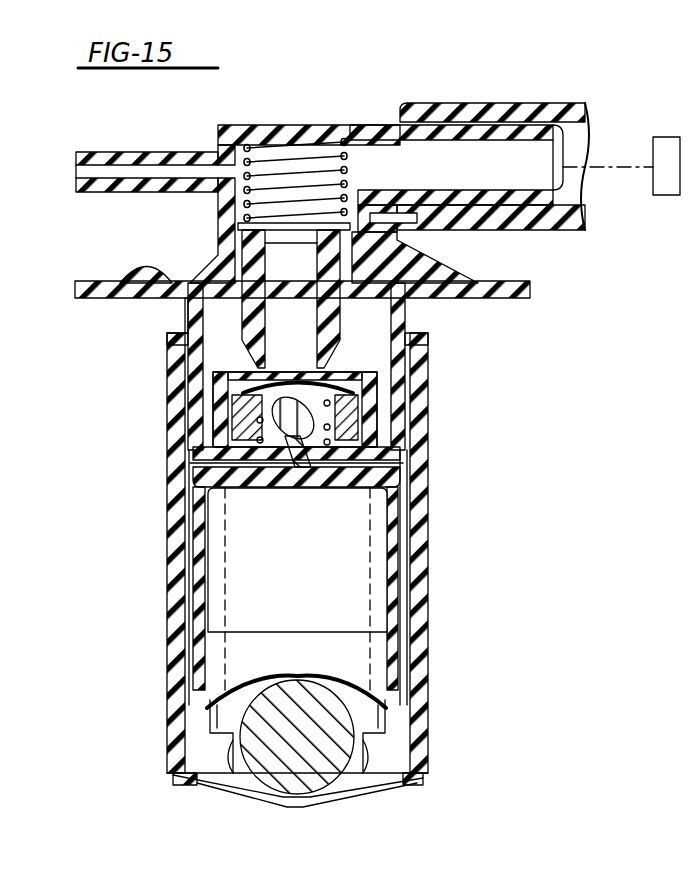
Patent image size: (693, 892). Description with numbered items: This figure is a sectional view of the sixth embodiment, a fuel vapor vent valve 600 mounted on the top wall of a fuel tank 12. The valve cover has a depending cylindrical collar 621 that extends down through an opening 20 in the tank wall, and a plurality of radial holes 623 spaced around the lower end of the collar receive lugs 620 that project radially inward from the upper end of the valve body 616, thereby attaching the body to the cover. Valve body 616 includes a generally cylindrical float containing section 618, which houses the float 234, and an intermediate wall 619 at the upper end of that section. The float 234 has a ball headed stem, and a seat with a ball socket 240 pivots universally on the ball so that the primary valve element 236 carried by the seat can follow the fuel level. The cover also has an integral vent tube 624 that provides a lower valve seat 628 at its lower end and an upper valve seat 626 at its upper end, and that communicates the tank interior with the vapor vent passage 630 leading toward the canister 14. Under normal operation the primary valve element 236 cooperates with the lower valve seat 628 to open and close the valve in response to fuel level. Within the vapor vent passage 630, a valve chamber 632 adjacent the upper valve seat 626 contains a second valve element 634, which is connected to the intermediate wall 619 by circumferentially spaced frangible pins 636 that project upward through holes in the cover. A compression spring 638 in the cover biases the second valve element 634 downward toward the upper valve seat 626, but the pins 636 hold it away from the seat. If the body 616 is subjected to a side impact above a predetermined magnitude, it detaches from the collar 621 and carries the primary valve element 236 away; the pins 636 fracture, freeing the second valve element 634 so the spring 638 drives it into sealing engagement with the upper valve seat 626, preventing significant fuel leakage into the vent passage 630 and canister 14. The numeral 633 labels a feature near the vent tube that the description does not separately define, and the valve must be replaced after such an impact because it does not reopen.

The fuel vapor vent valve 600 is at (448, 103).
The vapor vent passage 630 is at (524, 190).
The canister 14 is at (665, 195).
The upper valve seat 626 is at (318, 232).
The second valve element 634 is at (230, 152).
The frangible pins 636 is at (235, 224).
The valve chamber 632 is at (233, 186).
The seal groove 633 is at (371, 218).
The compression spring 638 is at (258, 240).
The vent tube 624 is at (243, 288).
The opening 20 is at (160, 260).
The fuel tank 12 is at (92, 298).
The collar 621 is at (187, 300).
The lugs 620 is at (207, 392).
The radial holes 623 is at (188, 354).
The valve body 616 is at (430, 502).
The lower valve seat 628 is at (243, 392).
The primary valve element 236 is at (360, 405).
The ball socket 240 is at (190, 457).
The float 234 is at (390, 523).
The intermediate wall 619 is at (225, 488).
The float containing section 618 is at (415, 600).